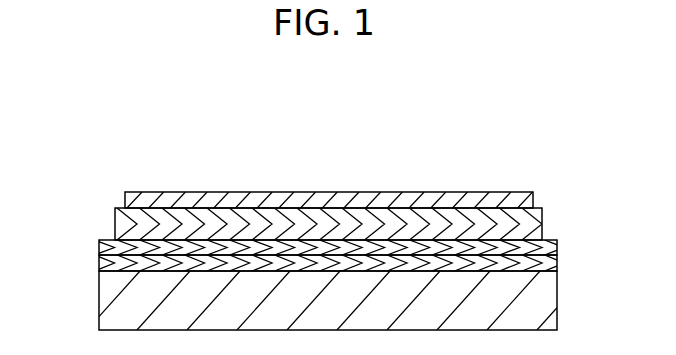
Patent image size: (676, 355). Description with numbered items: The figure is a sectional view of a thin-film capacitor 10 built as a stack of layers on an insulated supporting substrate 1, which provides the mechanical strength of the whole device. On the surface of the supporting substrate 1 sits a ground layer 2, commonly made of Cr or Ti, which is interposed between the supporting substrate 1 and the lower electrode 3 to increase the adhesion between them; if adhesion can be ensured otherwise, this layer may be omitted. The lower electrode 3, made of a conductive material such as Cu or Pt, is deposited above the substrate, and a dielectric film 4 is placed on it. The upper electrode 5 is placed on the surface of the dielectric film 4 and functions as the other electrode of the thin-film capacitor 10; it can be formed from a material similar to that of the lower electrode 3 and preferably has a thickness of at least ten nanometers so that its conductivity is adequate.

The supporting substrate 1 is at (545, 300).
The ground layer 2 is at (553, 263).
The lower electrode 3 is at (103, 247).
The dielectric film 4 is at (530, 227).
The upper electrode 5 is at (453, 198).
The thin-film capacitor 10 is at (211, 119).